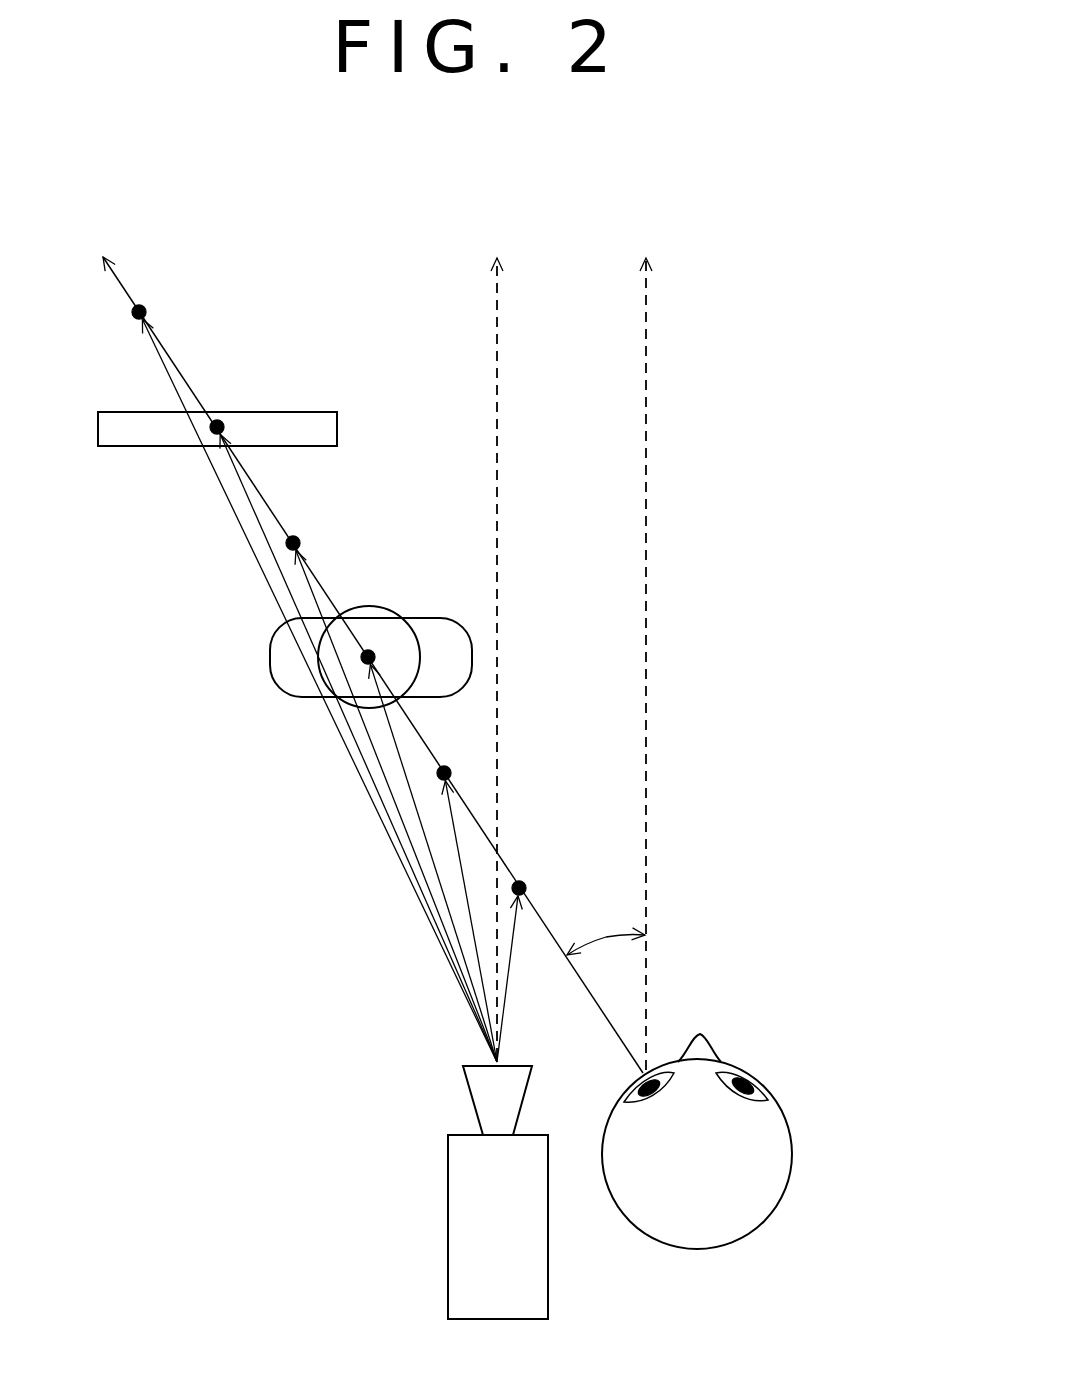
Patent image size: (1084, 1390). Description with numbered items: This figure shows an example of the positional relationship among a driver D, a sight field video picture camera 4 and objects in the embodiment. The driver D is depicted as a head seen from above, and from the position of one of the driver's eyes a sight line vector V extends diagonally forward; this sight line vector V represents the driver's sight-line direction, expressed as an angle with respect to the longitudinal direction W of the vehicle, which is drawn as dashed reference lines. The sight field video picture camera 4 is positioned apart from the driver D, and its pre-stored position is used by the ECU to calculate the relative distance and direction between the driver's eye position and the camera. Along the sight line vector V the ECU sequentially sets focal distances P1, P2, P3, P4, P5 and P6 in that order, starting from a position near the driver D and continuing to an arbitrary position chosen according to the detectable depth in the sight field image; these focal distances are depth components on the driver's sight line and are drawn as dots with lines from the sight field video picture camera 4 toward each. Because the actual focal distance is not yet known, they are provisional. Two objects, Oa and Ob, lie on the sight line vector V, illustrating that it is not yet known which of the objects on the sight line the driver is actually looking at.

The sight field video picture camera 4 is at (448, 1220).
The driver D is at (792, 1150).
The sight line vector V is at (120, 286).
The longitudinal direction of the vehicle W is at (498, 318).
The object b Ob is at (145, 447).
The object a Oa is at (270, 663).
The focal distance P1 is at (521, 884).
The focal distance P2 is at (447, 770).
The gaze point P3 is at (369, 652).
The gaze point P4 is at (296, 540).
The gaze point P5 is at (220, 424).
The gaze point P6 is at (145, 306).